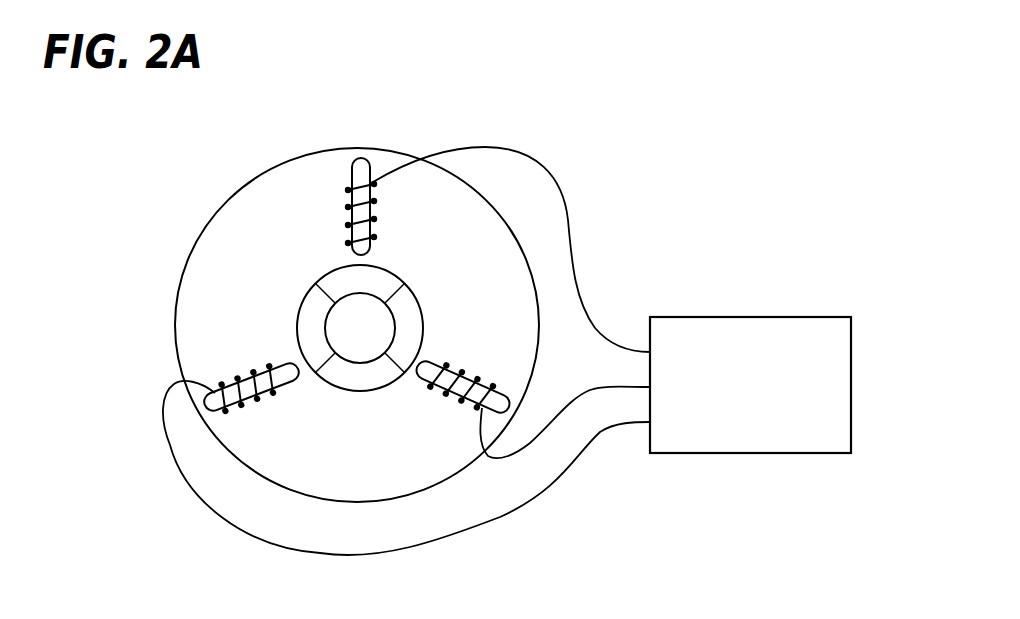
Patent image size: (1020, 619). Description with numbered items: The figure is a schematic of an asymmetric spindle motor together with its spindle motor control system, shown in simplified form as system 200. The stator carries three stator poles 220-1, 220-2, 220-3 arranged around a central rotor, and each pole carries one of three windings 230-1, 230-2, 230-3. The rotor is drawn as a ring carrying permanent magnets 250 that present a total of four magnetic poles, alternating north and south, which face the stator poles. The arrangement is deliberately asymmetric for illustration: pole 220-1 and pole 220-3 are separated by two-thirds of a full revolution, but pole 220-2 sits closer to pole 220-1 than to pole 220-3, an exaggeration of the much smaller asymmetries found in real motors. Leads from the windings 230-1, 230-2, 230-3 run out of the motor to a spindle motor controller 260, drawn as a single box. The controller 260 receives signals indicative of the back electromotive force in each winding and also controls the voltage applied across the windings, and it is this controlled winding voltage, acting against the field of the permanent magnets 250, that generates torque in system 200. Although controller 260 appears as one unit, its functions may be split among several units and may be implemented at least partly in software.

The system 200 is at (176, 185).
The stator pole 220-1 is at (350, 187).
The stator pole 220-2 is at (487, 385).
The stator pole 220-3 is at (267, 371).
The winding 230-1 is at (368, 243).
The winding 230-2 is at (435, 387).
The winding 230-3 is at (296, 380).
The permanent magnets 250 is at (416, 300).
The spindle motor controller 260 is at (742, 317).